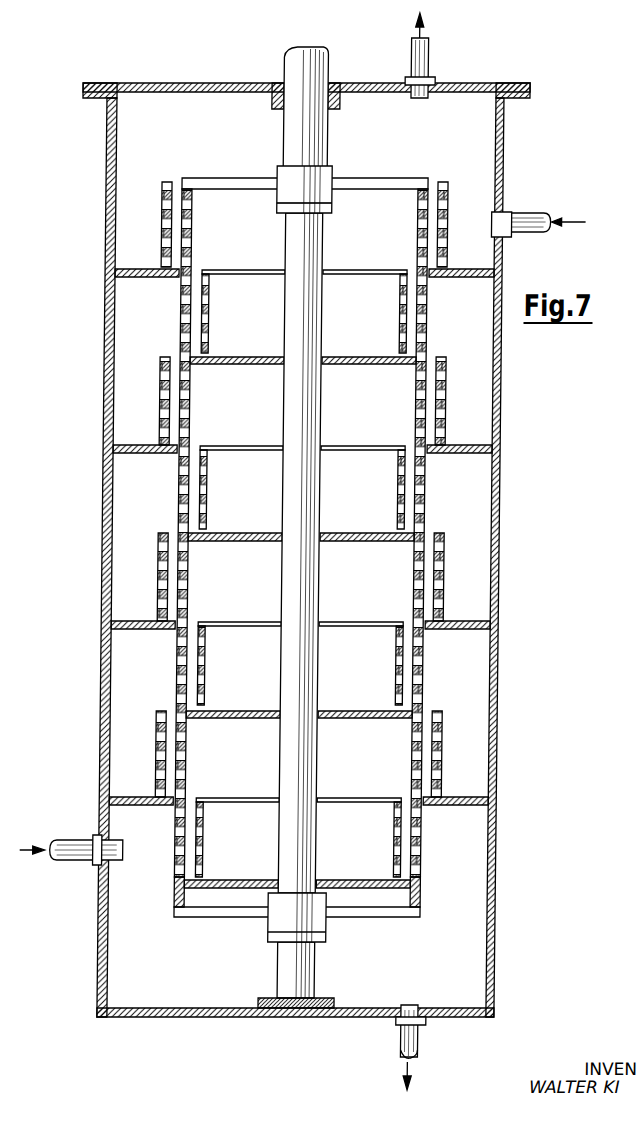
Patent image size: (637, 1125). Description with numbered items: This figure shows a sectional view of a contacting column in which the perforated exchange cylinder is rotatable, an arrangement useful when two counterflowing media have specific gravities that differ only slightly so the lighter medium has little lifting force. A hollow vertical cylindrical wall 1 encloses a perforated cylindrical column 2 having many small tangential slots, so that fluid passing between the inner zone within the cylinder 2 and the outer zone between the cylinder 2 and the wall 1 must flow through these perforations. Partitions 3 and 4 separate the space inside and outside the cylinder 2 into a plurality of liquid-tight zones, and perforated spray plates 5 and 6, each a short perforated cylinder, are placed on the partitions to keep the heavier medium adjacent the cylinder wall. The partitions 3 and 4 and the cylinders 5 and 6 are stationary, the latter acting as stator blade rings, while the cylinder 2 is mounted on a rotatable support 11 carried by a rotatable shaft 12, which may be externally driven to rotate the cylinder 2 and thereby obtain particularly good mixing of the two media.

The hollow vertical cylindrical wall 1 is at (104, 388).
The perforated cylindrical column 2 is at (188, 412).
The partitions 3 is at (260, 364).
The partitions 4 is at (134, 277).
The perforated spray plates 5 is at (158, 218).
The perforated spray plates 6 is at (207, 323).
The rotatable support 11 is at (313, 182).
The rotatable shaft 12 is at (303, 590).